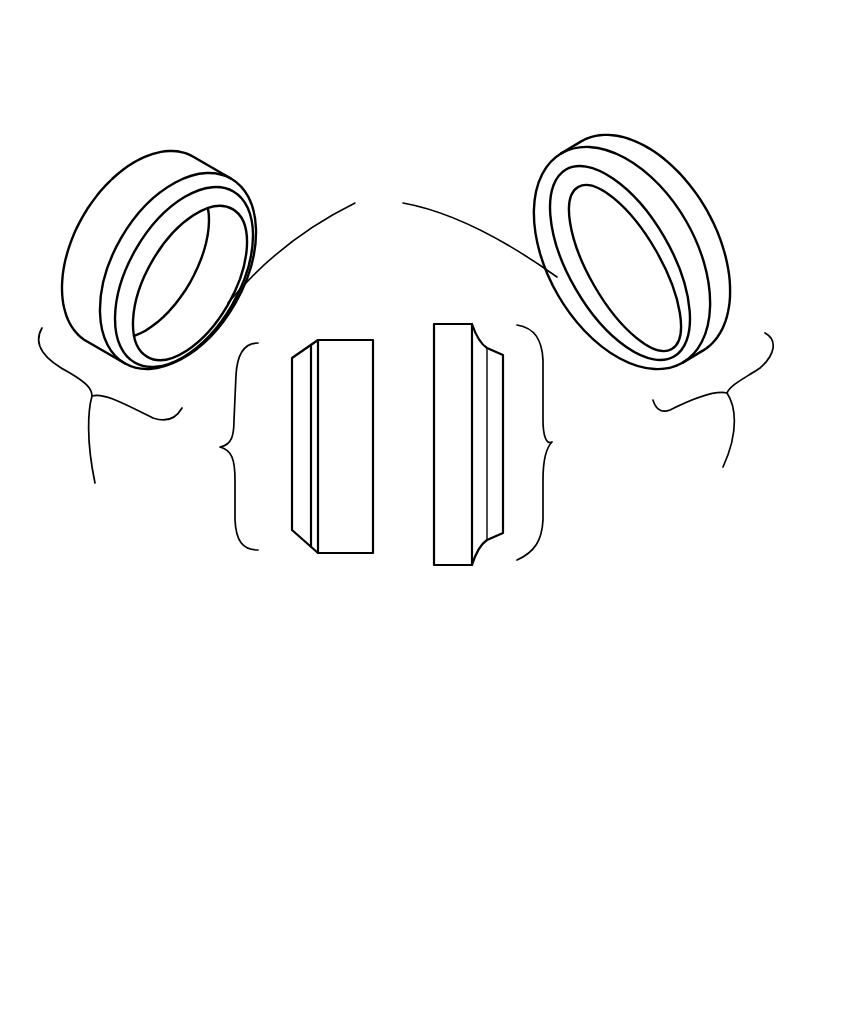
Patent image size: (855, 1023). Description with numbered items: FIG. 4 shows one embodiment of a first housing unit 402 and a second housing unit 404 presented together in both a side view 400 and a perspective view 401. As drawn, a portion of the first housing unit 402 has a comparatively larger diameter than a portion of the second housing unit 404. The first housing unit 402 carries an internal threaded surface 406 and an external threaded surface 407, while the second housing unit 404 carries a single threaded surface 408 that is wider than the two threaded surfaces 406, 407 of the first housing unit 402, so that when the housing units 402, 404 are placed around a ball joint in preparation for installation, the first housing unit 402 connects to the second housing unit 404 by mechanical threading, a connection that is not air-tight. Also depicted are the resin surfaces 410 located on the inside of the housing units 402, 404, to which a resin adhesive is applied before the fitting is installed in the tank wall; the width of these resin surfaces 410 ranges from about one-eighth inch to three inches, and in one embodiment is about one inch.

The side view 400 is at (402, 636).
The perspective view 401 is at (480, 91).
The first housing unit 402 is at (552, 442).
The second housing unit 404 is at (220, 447).
The internal threaded surface 406 is at (585, 283).
The external threaded surface 407 is at (440, 324).
The single threaded surface 408 is at (338, 340).
The resin surfaces 410 is at (403, 203).